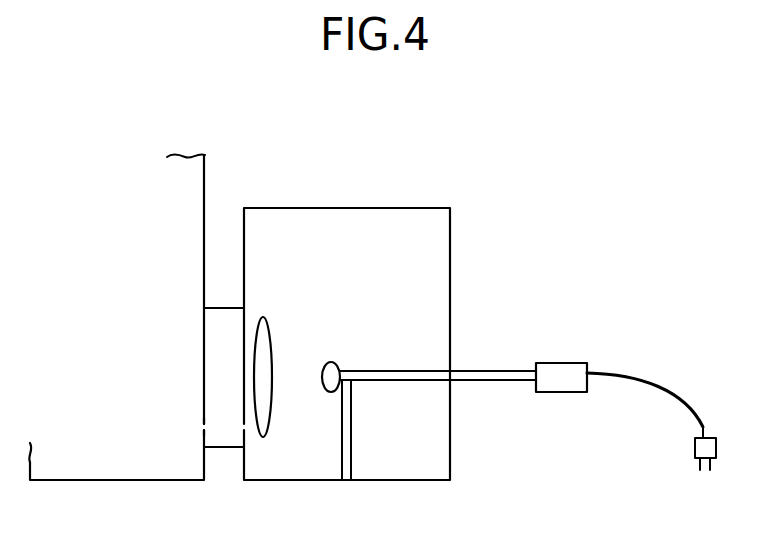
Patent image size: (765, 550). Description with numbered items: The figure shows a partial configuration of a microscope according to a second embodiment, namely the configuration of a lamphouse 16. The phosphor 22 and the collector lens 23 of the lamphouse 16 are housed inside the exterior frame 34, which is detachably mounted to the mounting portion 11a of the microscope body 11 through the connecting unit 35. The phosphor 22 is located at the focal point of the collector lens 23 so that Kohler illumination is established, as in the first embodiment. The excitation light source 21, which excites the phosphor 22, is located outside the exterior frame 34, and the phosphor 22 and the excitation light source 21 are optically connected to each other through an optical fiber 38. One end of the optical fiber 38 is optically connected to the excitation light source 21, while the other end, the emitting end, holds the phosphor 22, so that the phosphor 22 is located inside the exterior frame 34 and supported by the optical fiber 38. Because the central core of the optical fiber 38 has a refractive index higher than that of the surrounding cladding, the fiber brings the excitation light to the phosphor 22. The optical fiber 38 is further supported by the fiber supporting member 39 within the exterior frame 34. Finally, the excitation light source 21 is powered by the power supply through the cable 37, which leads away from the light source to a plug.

The microscope body 11 is at (125, 483).
The mounting portion 11a is at (210, 427).
The lamphouse 16 is at (427, 138).
The excitation light source 21 is at (559, 363).
The phosphor 22 is at (330, 361).
The collector lens 23 is at (273, 403).
The exterior frame 34 is at (353, 208).
The connecting unit 35 is at (218, 308).
The cable 37 is at (658, 381).
The optical fiber 38 is at (406, 370).
The fiber supporting member 39 is at (352, 428).